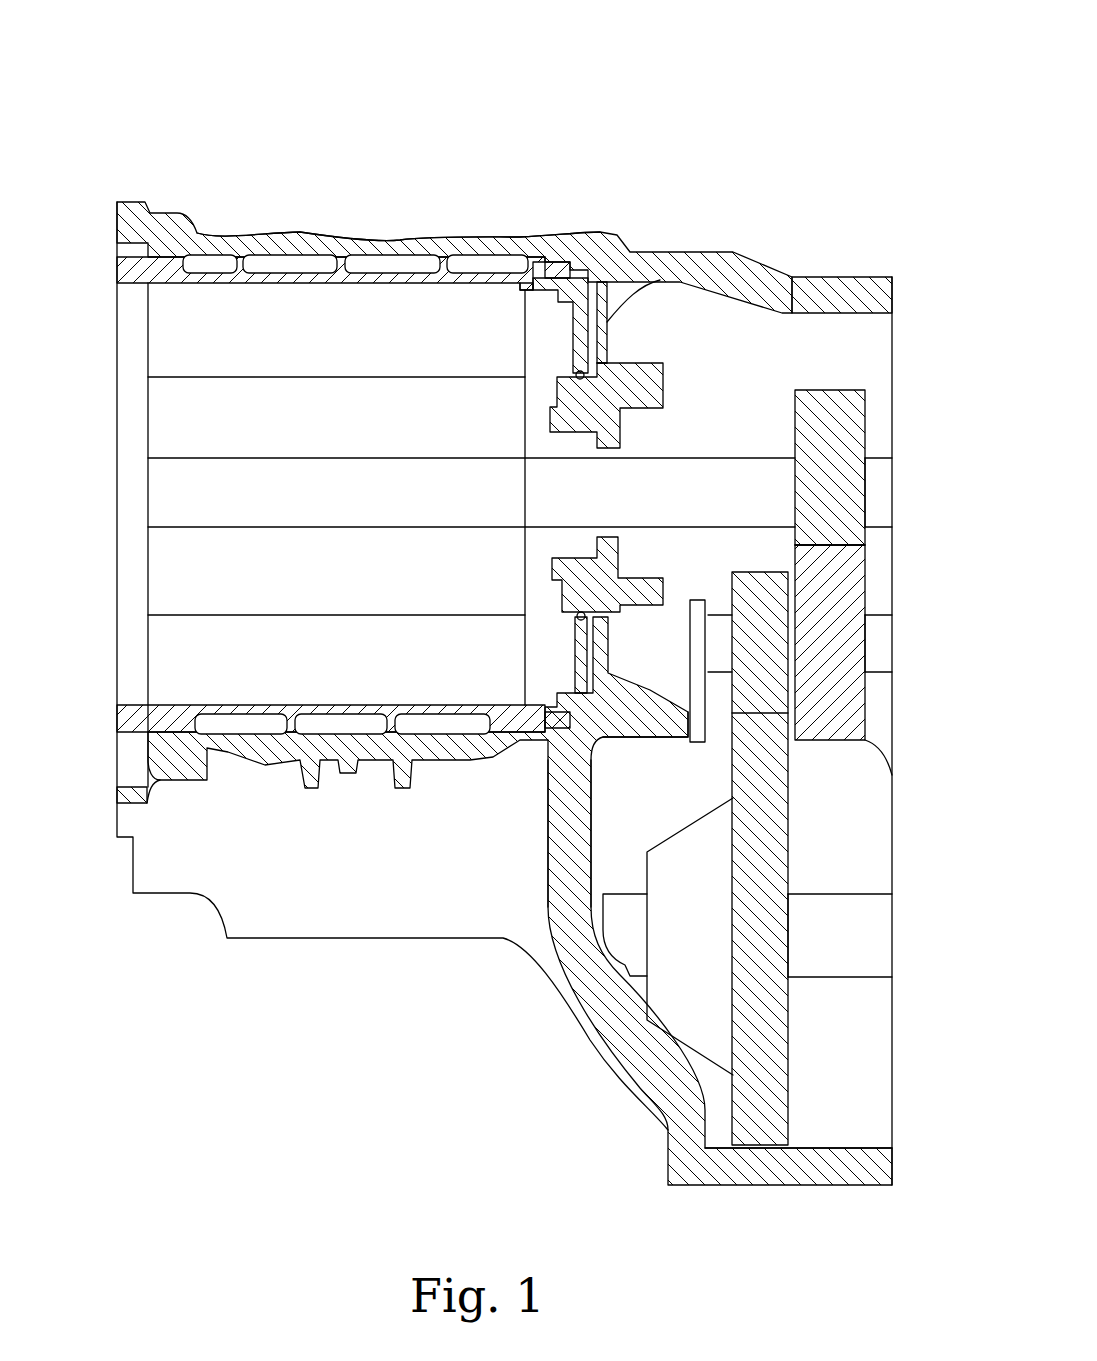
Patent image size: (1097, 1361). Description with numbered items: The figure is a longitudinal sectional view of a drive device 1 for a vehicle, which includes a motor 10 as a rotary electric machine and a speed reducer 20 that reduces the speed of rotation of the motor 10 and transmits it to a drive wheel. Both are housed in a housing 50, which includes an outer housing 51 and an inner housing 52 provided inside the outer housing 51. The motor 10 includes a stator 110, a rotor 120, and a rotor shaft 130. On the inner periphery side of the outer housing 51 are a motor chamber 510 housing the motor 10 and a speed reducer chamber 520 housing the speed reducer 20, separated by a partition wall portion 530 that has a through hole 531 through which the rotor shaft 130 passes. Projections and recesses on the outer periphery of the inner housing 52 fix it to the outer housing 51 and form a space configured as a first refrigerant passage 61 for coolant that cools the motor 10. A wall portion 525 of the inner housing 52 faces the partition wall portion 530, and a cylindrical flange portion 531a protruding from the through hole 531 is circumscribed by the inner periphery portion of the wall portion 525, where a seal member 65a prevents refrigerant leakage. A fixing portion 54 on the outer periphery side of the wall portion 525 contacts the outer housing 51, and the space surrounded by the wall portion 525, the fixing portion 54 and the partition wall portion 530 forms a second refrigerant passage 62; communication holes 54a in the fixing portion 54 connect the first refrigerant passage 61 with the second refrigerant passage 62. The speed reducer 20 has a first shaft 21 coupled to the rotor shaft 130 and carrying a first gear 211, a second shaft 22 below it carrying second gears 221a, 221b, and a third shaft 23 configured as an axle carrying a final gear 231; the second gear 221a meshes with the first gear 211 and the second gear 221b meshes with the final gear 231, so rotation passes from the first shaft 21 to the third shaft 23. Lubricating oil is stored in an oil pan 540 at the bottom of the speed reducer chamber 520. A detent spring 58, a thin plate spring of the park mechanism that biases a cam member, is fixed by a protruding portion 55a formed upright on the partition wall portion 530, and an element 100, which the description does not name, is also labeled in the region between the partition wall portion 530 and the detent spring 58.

The drive device 1 is at (626, 98).
The motor 10 is at (206, 295).
The speed reducer 20 is at (763, 325).
The first shaft 21 is at (880, 470).
The second shaft 22 is at (880, 640).
The third shaft 23 is at (880, 905).
The housing 50 is at (450, 238).
The outer housing 51 is at (378, 245).
The inner housing 52 is at (340, 262).
The fixing portion 54 is at (545, 300).
The communication hole 54a is at (552, 268).
The protruding portion 55a is at (657, 725).
The detent spring 58 is at (725, 690).
The first refrigerant passage 61 is at (283, 235).
The second refrigerant passage 62 is at (600, 290).
The seal member 65a is at (605, 355).
The rotor 100 is at (662, 670).
The stator 110 is at (175, 333).
The rotor 120 is at (175, 407).
The rotor shaft 130 is at (175, 490).
The first gear 211 is at (835, 410).
The second gear 221a is at (850, 718).
The second gear 221b is at (778, 705).
The final gear 231 is at (760, 1120).
The motor chamber 510 is at (540, 330).
The speed reducer chamber 520 is at (800, 300).
The wall portion 525 is at (575, 347).
The partition wall portion 530 is at (607, 322).
The through hole 531 is at (665, 455).
The cylindrical flange portion 531a is at (573, 377).
The oil pan 540 is at (830, 1148).